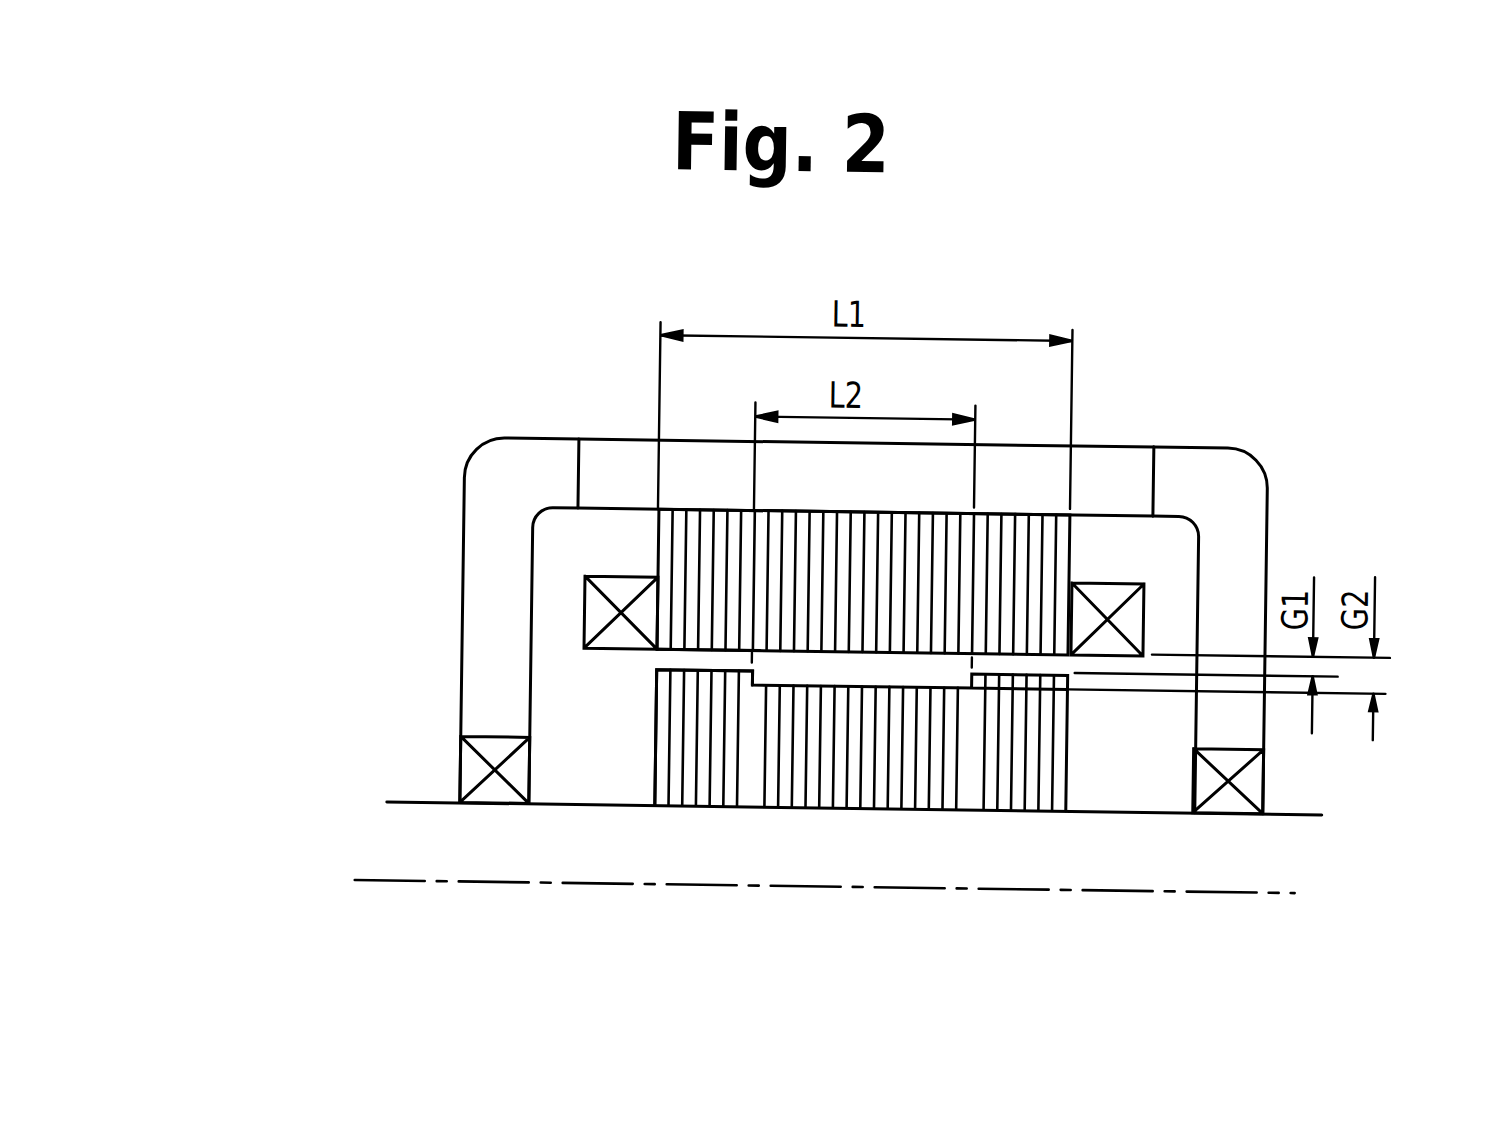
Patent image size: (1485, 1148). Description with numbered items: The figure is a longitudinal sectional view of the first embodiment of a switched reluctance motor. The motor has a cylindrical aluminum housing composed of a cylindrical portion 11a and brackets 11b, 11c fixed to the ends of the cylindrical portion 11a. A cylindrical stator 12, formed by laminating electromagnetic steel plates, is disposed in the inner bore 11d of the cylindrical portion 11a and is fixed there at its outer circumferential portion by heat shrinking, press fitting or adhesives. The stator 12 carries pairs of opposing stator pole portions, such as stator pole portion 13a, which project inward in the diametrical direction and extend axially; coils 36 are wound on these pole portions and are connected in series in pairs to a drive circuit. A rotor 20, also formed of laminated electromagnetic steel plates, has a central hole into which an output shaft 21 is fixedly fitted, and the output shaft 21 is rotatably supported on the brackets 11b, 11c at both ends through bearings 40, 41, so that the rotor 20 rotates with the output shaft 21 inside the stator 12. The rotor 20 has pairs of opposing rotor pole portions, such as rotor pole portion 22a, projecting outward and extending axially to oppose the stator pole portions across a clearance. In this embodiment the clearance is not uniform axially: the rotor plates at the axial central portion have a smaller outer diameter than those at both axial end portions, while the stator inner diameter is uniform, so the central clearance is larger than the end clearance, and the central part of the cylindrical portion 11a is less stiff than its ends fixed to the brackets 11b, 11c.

The cylindrical portion 11a is at (1110, 460).
The bracket 11b is at (1240, 468).
The bracket 11c is at (475, 665).
The inner bore 11d is at (1155, 513).
The stator 12 is at (661, 538).
The stator pole portion 13a is at (687, 639).
The rotor 20 is at (690, 784).
The output shaft 21 is at (1175, 835).
The rotor pole portion 22a is at (691, 699).
The coil 36 is at (1119, 589).
The bearing 40 is at (1254, 768).
The bearing 41 is at (472, 768).